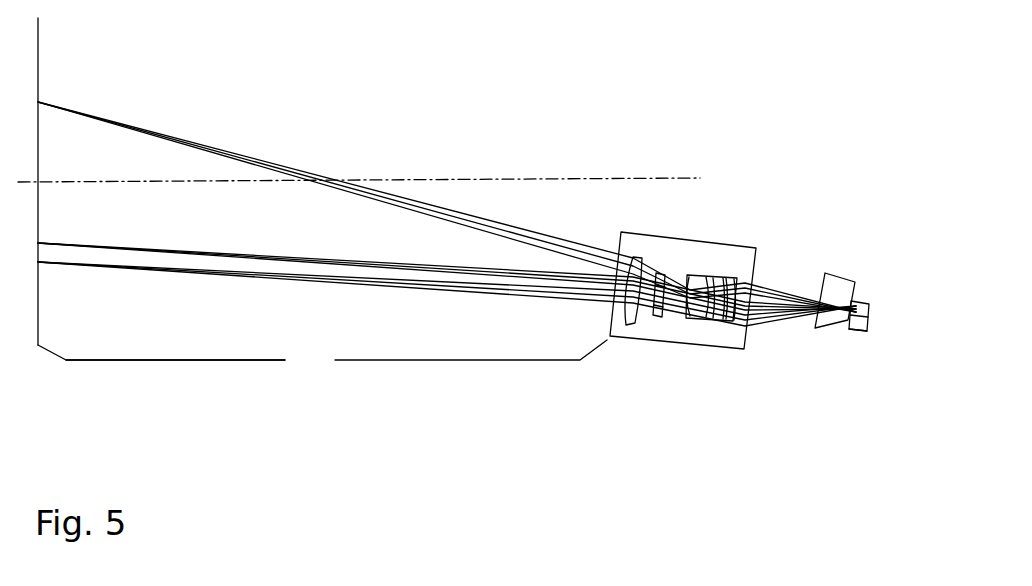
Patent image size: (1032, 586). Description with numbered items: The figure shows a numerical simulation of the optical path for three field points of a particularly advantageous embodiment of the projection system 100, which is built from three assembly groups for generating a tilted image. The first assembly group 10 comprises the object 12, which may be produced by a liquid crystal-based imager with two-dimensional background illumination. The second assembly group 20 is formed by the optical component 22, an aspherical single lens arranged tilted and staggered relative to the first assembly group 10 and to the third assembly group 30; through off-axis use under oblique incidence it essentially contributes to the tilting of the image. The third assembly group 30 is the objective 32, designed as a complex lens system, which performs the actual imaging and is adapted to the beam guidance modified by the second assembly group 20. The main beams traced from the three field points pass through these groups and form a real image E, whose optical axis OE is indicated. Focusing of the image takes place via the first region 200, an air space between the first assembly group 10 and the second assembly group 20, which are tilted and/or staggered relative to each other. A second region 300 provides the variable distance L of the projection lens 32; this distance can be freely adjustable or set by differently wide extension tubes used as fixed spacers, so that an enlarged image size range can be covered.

The image E is at (38, 72).
The optical axis of the image OE is at (615, 178).
The variable distance L is at (322, 360).
The second region 300 is at (420, 360).
The projection system 100 is at (495, 130).
The first region 200 is at (782, 275).
The third assembly group 30 is at (658, 342).
The objective 32 is at (682, 302).
The second assembly group 20 is at (823, 250).
The optical component 22 is at (840, 275).
The first assembly group 10 is at (870, 320).
The object 12 is at (852, 332).